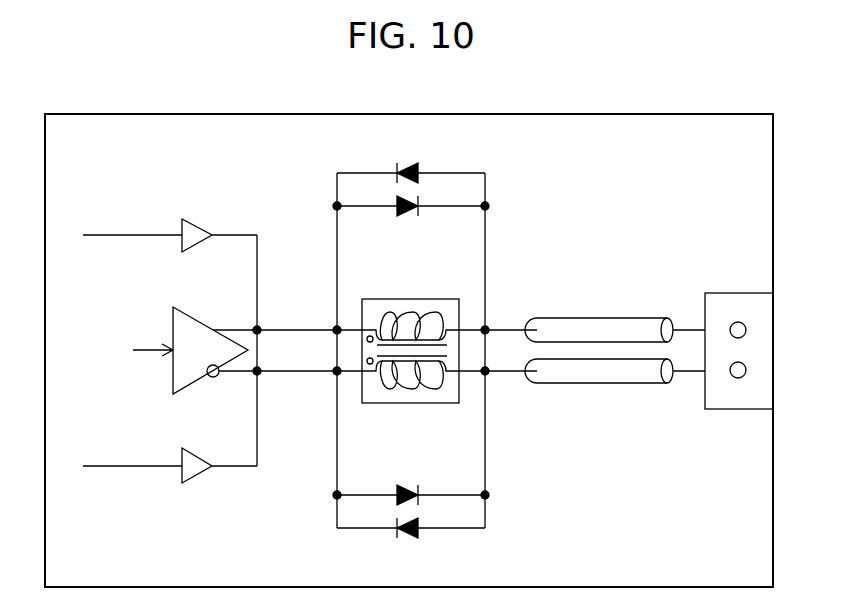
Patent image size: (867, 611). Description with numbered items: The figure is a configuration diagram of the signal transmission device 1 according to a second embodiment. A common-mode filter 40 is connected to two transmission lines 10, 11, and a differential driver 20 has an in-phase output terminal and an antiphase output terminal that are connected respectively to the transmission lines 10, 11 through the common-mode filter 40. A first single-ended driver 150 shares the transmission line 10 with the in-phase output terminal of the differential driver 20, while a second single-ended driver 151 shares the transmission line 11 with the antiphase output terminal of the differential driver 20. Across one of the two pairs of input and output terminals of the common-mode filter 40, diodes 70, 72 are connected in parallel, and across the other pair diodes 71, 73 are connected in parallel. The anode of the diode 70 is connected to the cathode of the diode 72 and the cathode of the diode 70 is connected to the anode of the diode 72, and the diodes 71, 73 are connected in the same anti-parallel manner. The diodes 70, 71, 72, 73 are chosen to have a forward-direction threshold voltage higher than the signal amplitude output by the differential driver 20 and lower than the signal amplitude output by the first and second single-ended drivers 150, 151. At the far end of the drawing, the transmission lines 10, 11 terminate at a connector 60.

The signal transmission device 1 is at (593, 114).
The transmission line 10 is at (597, 318).
The transmission line 11 is at (597, 383).
The differential driver 20 is at (174, 381).
The common-mode filter 40 is at (408, 299).
The connector 60 is at (738, 293).
The diode 70 is at (410, 217).
The diode 71 is at (410, 486).
The diode 72 is at (421, 165).
The diode 73 is at (420, 538).
The first single-ended driver 150 is at (198, 219).
The second single-ended driver 151 is at (198, 481).